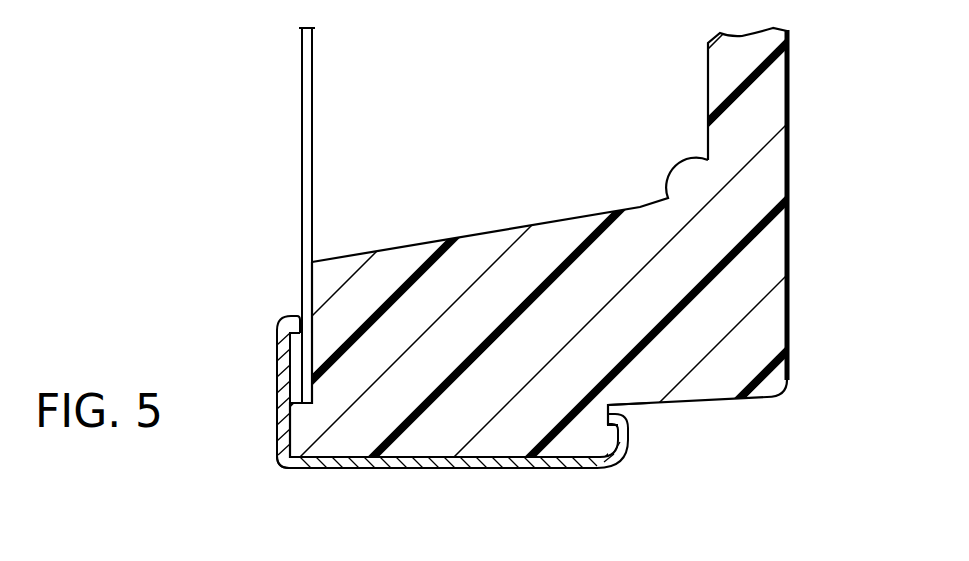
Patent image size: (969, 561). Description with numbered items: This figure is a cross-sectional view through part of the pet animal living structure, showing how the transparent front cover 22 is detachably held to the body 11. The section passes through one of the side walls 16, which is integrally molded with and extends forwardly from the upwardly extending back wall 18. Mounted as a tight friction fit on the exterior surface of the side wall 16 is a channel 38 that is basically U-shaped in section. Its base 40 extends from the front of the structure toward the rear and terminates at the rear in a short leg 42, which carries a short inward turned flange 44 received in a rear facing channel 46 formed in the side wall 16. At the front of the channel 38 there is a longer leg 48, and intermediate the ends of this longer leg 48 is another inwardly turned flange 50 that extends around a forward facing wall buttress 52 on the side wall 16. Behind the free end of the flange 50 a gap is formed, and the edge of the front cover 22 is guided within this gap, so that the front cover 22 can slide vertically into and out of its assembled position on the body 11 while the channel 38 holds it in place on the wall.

The body 11 is at (793, 297).
The side wall 16 is at (557, 242).
The back wall 18 is at (770, 93).
The front cover 22 is at (301, 126).
The channel 38 is at (526, 474).
The base 40 is at (462, 468).
The short leg 42 is at (627, 437).
The inward turned flange 44 is at (623, 417).
The rear facing channel 46 is at (612, 408).
The longer leg 48 is at (280, 435).
The inwardly turned flange 50 is at (292, 383).
The wall buttress 52 is at (300, 443).